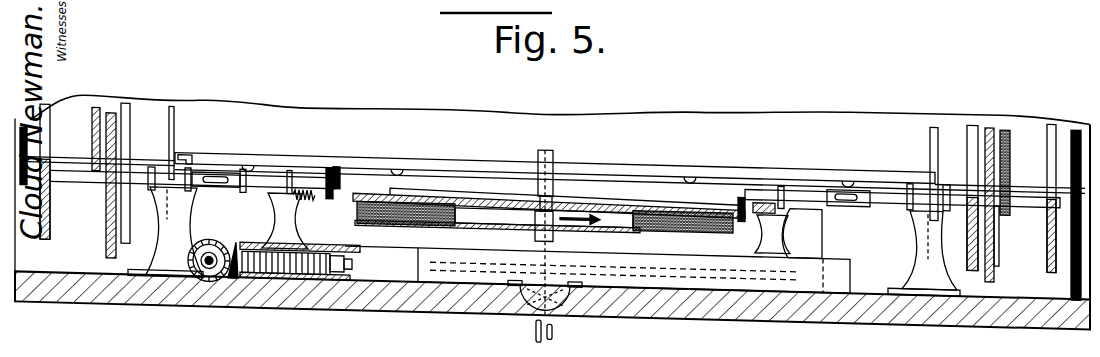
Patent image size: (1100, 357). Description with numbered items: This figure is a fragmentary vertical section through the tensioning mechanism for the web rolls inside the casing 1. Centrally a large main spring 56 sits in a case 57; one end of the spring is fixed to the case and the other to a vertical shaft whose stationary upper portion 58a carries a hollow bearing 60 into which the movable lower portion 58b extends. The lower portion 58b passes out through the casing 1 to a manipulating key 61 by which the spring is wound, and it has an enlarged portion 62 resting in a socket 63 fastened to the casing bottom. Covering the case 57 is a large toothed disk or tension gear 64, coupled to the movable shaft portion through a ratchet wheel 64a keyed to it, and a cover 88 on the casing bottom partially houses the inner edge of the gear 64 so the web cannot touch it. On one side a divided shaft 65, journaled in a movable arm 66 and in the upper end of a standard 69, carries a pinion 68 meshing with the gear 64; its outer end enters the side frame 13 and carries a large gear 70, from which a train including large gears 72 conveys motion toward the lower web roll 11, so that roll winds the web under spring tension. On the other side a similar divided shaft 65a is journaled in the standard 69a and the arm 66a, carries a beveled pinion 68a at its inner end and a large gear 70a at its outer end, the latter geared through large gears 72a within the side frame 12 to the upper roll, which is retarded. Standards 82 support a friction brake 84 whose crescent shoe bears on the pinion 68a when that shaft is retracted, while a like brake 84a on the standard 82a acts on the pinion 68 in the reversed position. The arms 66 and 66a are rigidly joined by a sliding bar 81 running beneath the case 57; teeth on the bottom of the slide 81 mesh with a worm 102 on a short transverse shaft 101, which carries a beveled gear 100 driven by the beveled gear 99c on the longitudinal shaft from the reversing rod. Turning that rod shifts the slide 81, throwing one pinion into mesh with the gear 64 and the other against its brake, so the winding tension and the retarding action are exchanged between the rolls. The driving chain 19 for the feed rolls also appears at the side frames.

The casing 1 is at (782, 290).
The lower flanged web roll 11 is at (286, 152).
The side frame 12 is at (125, 146).
The side frame 13 is at (970, 118).
The driving chain 19 is at (29, 149).
The main spring 56 is at (457, 214).
The spring case 57 is at (602, 256).
The stationary upper shaft portion 58a is at (552, 140).
The movable lower shaft portion 58b is at (550, 219).
The hollow bearing 60 is at (585, 180).
The manipulating key 61 is at (546, 326).
The enlarged shaft portion 62 is at (578, 292).
The socket 63 is at (515, 288).
The large toothed disk 64 is at (608, 196).
The ratchet wheel 64a is at (600, 182).
The divided shaft 65 is at (890, 180).
The divided shaft 65a is at (155, 181).
The movable arm 66 is at (806, 205).
The movable arm 66a is at (262, 190).
The pinion 68 is at (742, 163).
The beveled pinion 68a is at (338, 161).
The standard 69 is at (920, 249).
The standard 69a is at (170, 220).
The large gear 70 is at (992, 202).
The large gear 70a is at (106, 201).
The large gear 72 is at (1010, 119).
The large gear 72a is at (99, 109).
The sliding bar 81 is at (355, 243).
The standard 82 is at (310, 220).
The standard 82a is at (768, 214).
The friction brake 84 is at (326, 190).
The friction brake 84a is at (772, 186).
The cover 88 is at (437, 176).
The beveled gear 99c is at (168, 239).
The beveled gear 100 is at (235, 264).
The short transverse shaft 101 is at (343, 263).
The worm 102 is at (305, 262).